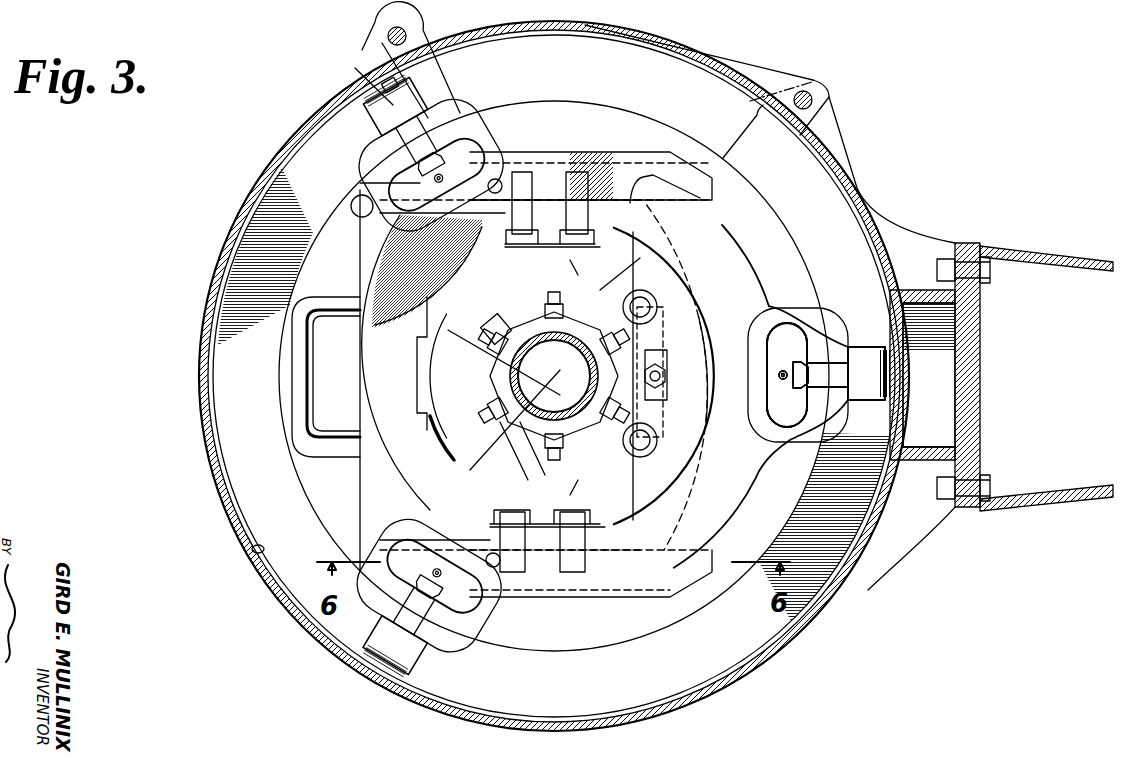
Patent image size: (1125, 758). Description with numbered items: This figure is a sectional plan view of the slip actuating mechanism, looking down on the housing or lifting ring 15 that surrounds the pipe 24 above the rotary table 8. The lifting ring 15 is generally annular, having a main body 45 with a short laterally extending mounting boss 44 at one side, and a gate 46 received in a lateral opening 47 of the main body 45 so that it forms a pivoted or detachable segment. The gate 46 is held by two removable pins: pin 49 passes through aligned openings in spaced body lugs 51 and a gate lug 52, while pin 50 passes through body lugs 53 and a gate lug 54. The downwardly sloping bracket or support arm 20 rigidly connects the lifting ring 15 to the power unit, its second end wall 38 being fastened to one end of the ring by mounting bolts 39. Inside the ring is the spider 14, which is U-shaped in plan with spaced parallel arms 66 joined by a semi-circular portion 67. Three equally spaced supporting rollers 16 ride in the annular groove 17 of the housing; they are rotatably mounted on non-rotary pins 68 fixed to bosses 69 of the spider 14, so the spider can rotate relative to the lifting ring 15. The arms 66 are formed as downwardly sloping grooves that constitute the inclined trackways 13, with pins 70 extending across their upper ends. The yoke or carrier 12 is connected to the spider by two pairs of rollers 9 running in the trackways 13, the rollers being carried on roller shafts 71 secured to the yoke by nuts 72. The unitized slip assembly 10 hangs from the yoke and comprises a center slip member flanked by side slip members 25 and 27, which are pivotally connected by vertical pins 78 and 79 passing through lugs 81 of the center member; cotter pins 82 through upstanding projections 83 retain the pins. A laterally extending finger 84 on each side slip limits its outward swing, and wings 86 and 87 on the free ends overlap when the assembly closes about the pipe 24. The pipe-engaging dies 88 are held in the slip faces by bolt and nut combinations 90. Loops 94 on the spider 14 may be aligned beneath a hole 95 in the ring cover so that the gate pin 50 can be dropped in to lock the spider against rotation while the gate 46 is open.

The rotary table 8 is at (252, 486).
The rollers 9 is at (572, 172).
The unitized slip assembly 10 is at (532, 450).
The yoke or carrier 12 is at (690, 428).
The inclined trackways 13 is at (610, 163).
The spider 14 is at (742, 254).
The housing or lifting ring 15 is at (762, 664).
The supporting rollers 16 is at (866, 348).
The annular groove 17 is at (250, 552).
The bracket or support arm 20 is at (1050, 252).
The pipe 24 is at (588, 380).
The side slip member 25 is at (478, 458).
The side slip member 27 is at (450, 290).
The second end wall 38 is at (982, 414).
The mounting bolts 39 is at (970, 262).
The mounting boss 44 is at (925, 450).
The main body 45 is at (806, 622).
The gate 46 is at (730, 70).
The lateral opening 47 is at (772, 95).
The pin 49 is at (813, 98).
The pin 50 is at (386, 34).
The body lugs 51 is at (845, 135).
The gate lug 52 is at (838, 105).
The body lugs 53 is at (353, 68).
The gate lug 54 is at (380, 45).
The arms 66 is at (420, 245).
The semi-circular portion 67 is at (742, 300).
The non-rotary pins 68 is at (380, 85).
The bosses 69 is at (838, 398).
The pins 70 is at (497, 179).
The roller shafts 71 is at (575, 377).
The nuts 72 is at (525, 250).
The vertical pin 78 is at (615, 442).
The vertical pin 79 is at (612, 300).
The lugs 81 is at (580, 340).
The cotter pins 82 is at (652, 305).
The upstanding projections 83 is at (615, 300).
The laterally extending finger 84 is at (622, 460).
The wing 86 is at (417, 340).
The wing 87 is at (428, 425).
The pipe-engaging inserts or dies 88 is at (500, 396).
The bolt and nut combinations 90 is at (497, 322).
The loops 94 is at (415, 217).
The hole 95 is at (358, 216).